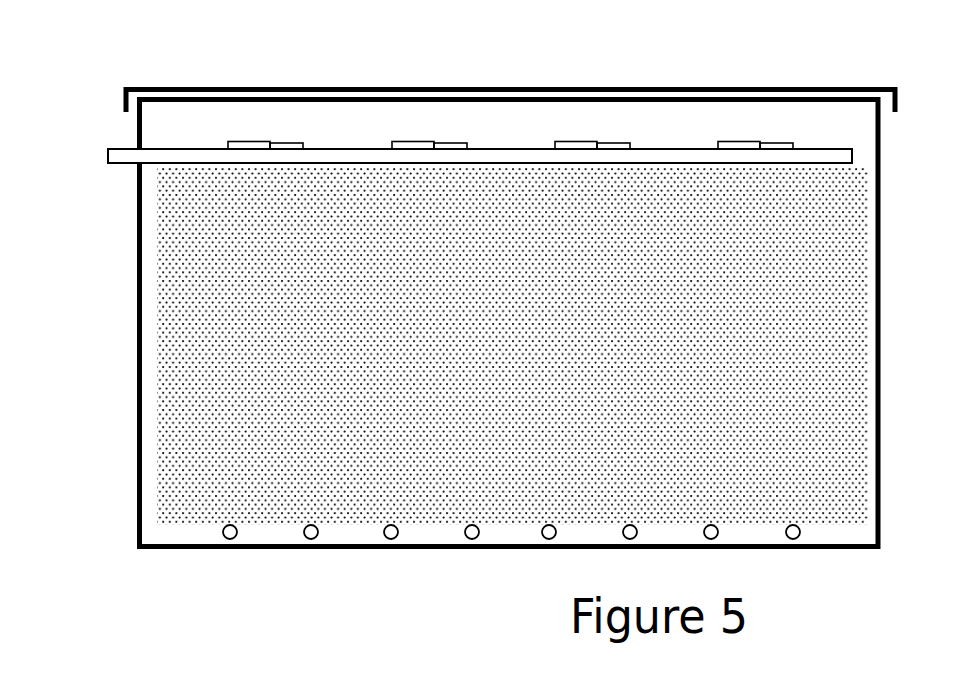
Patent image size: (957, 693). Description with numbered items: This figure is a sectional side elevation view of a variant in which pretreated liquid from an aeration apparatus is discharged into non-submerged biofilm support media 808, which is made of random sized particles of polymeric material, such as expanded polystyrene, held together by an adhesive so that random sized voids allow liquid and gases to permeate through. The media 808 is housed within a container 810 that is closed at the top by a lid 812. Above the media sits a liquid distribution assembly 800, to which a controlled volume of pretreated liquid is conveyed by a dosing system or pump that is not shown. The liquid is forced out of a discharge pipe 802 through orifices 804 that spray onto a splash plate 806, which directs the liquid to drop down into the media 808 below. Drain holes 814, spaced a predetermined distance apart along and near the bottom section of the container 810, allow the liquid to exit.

The distribution assembly 800 is at (76, 140).
The discharge pipe 802 is at (127, 165).
The orifices 804 is at (265, 150).
The splash plate 806 is at (398, 149).
The non-submerged biofilm support media 808 is at (222, 293).
The container 810 is at (138, 421).
The lid 812 is at (748, 87).
The drain holes 814 is at (228, 539).